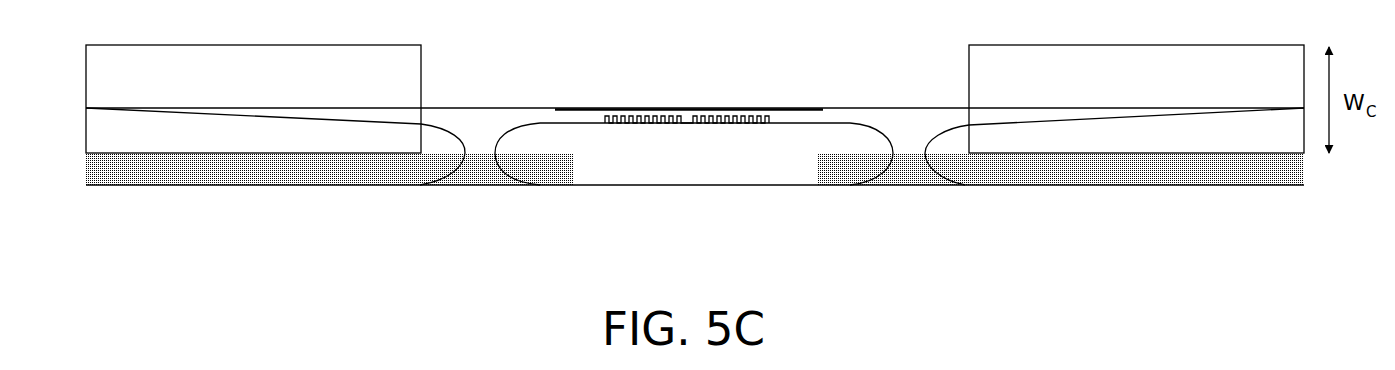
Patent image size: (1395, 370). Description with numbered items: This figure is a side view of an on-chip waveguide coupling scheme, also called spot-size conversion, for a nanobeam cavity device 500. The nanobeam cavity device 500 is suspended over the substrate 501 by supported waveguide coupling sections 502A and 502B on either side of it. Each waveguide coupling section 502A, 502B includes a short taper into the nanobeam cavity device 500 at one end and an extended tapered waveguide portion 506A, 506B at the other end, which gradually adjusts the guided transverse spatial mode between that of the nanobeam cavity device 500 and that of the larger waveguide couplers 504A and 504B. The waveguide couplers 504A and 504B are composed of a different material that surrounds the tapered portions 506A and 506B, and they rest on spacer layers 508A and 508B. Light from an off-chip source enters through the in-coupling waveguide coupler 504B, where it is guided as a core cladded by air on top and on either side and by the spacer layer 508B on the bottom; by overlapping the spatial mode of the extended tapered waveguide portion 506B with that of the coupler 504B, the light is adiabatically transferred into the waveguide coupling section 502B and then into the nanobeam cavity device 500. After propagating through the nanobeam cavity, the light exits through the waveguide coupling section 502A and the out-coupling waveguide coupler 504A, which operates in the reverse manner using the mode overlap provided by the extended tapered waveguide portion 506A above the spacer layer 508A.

The nanobeam cavity device 500 is at (693, 90).
The substrate 501 is at (715, 221).
The waveguide coupling section 502A is at (480, 133).
The waveguide coupling section 502B is at (907, 133).
The out-coupling waveguide coupler 504A is at (422, 91).
The in-coupling waveguide coupler 504B is at (968, 91).
The extended tapered waveguide portion 506A is at (207, 125).
The extended tapered waveguide portion 506B is at (1140, 127).
The spacer layer 508A is at (268, 165).
The spacer layer 508B is at (1233, 167).